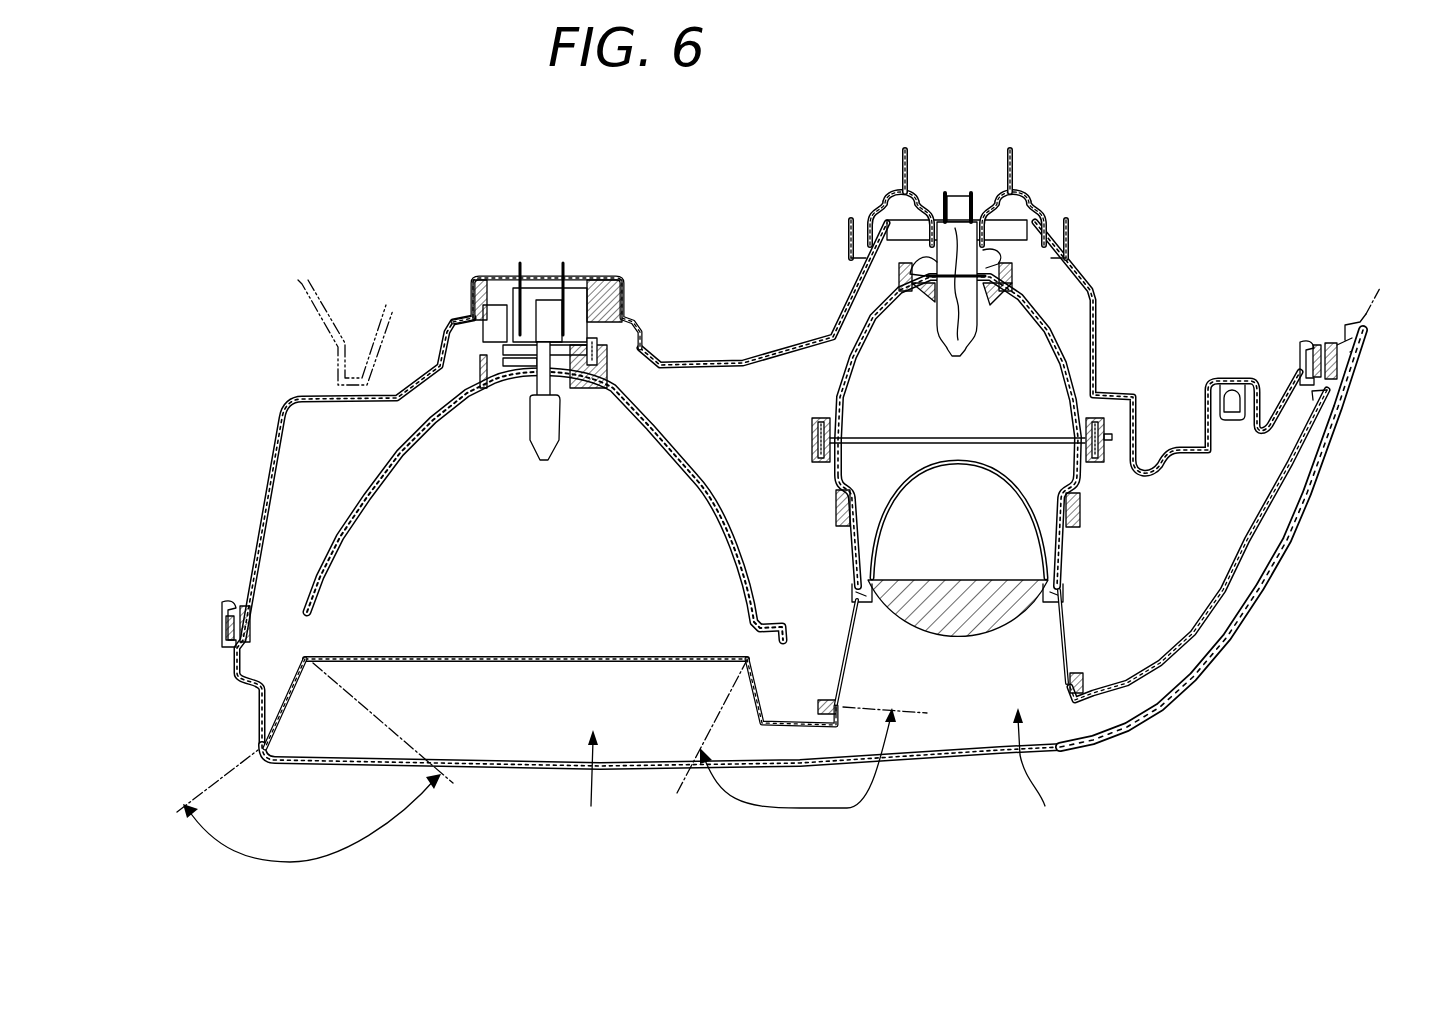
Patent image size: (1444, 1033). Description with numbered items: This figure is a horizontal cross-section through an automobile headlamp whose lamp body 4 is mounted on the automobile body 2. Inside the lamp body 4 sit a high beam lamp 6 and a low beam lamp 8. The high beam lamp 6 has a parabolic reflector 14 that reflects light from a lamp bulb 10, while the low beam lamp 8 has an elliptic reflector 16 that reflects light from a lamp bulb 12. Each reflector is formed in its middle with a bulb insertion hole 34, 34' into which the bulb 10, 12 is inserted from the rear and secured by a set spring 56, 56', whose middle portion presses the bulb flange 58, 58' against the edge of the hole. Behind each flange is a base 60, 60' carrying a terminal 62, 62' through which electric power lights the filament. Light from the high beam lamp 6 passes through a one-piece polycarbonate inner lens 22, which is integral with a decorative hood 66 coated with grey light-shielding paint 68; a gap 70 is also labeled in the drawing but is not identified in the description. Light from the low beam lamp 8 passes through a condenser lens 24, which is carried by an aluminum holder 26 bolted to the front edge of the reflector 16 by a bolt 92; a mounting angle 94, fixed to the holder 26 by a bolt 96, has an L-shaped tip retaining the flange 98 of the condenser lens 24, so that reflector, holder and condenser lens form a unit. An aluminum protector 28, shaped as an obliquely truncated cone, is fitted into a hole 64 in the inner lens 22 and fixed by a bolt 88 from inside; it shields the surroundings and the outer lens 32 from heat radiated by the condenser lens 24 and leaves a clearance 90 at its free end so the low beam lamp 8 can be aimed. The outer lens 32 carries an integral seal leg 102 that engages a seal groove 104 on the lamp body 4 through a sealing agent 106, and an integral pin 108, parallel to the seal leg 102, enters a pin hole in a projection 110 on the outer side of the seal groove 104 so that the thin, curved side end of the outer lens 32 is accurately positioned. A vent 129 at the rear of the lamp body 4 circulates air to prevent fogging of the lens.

The automobile body 2 is at (317, 293).
The lamp body 4 is at (730, 358).
The high beam lamp 6 is at (598, 838).
The low beam lamp 8 is at (1056, 838).
The lamp bulb 10 is at (548, 455).
The lamp bulb 12 is at (968, 338).
The reflector 14 is at (355, 520).
The reflector 16 is at (1060, 345).
The inner lens 22 is at (1250, 568).
The condenser lens 24 is at (1010, 627).
The holder 26 is at (1090, 490).
The protector 28 is at (852, 662).
The outer lens 32 is at (1290, 540).
The bulb insertion hole 34 is at (508, 406).
The bulb insertion hole 34' is at (951, 320).
The set spring 56 is at (520, 317).
The set spring 56' is at (1034, 274).
The flange 58 is at (587, 396).
The flange 58' is at (958, 186).
The base 60 is at (510, 261).
The base 60' is at (929, 151).
The terminal 62 is at (567, 261).
The terminal 62' is at (990, 151).
The hole 64 is at (965, 748).
The hood 66 is at (298, 712).
The grey light-shielding paint 68 is at (340, 862).
The gap 70 is at (300, 637).
The bolt 88 is at (820, 708).
The clearance 90 is at (855, 596).
The bolt 92 is at (820, 416).
The mounting angle 94 is at (858, 580).
The bolt 96 is at (840, 525).
The flange 98 is at (882, 562).
The seal leg 102 is at (1312, 345).
The seal groove 104 is at (1332, 343).
The sealing agent 106 is at (1300, 358).
The pin 108 is at (1352, 357).
The projection 110 is at (1352, 373).
The vent 129 is at (1230, 390).